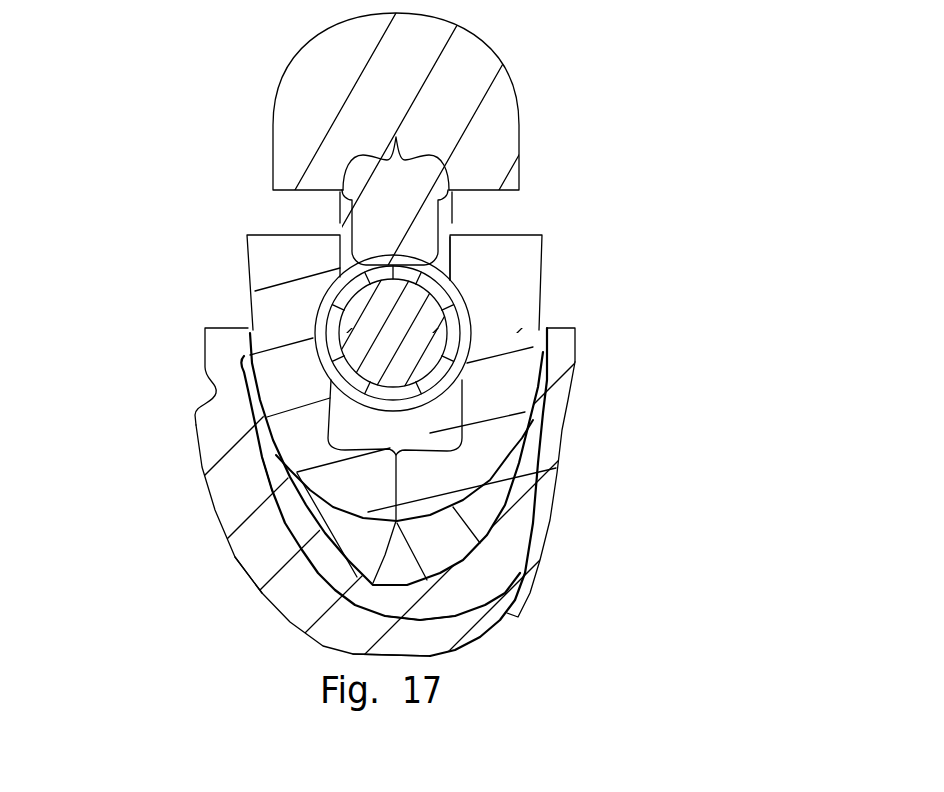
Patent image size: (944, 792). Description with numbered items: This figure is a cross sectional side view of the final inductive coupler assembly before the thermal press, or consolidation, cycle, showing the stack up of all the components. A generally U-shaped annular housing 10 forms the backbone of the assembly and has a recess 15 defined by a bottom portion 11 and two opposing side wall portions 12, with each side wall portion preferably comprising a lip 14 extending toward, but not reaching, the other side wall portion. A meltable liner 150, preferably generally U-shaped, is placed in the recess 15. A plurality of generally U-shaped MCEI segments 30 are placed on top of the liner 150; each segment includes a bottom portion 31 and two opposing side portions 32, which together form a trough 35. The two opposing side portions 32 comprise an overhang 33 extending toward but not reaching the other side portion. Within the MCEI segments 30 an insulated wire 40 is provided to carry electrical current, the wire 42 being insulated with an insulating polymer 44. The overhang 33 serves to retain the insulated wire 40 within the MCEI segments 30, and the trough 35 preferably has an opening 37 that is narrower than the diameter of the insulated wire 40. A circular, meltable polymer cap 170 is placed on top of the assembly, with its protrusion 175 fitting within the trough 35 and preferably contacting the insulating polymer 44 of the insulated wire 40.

The annular housing 10 is at (483, 607).
The bottom portion 11 is at (440, 617).
The side wall portions 12 is at (232, 380).
The lip 14 is at (553, 337).
The recess 15 is at (317, 563).
The MCEI segments 30 is at (482, 438).
The bottom portion 31 is at (420, 487).
The side portions 32 is at (297, 292).
The overhang 33 is at (461, 253).
The trough 35 is at (360, 408).
The opening 37 is at (397, 133).
The insulated wire 40 is at (445, 612).
The wire 42 is at (397, 293).
The insulating polymer 44 is at (448, 300).
The meltable liner 150 is at (302, 510).
The meltable polymer cap 170 is at (450, 93).
The protrusion 175 is at (383, 238).